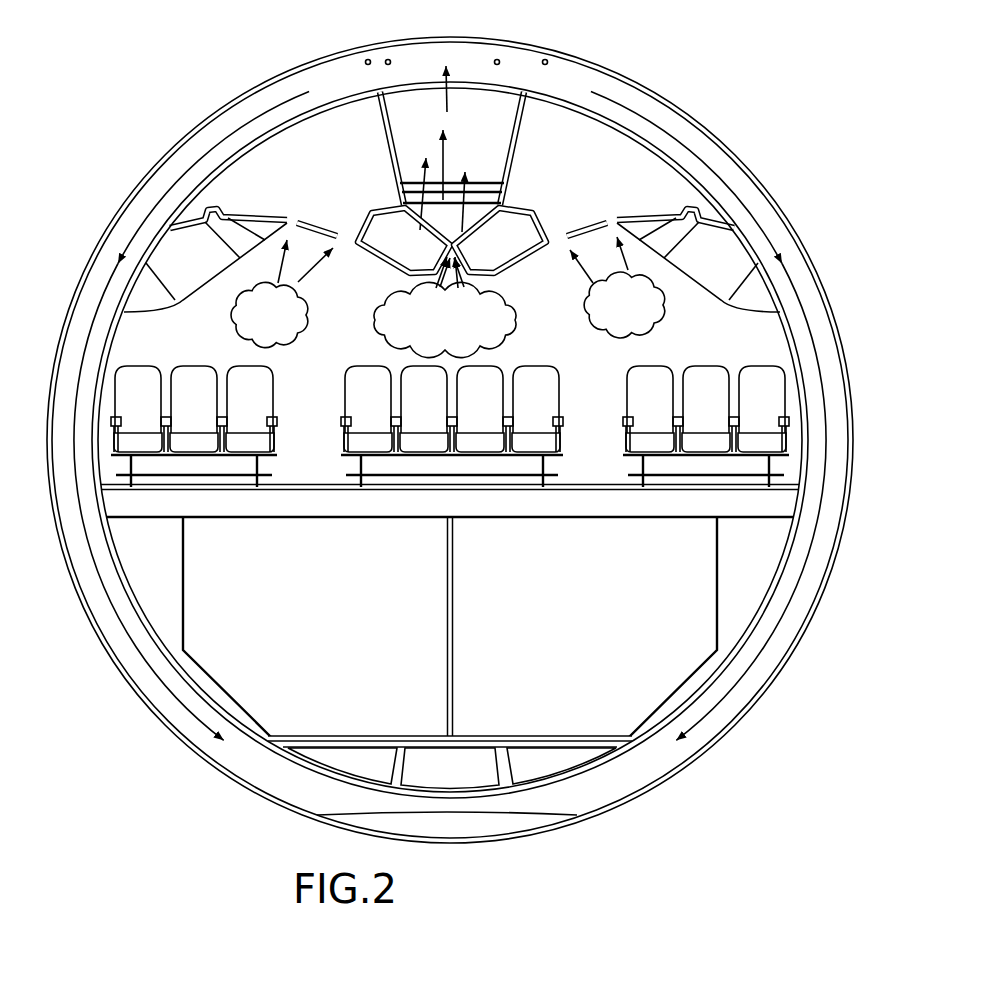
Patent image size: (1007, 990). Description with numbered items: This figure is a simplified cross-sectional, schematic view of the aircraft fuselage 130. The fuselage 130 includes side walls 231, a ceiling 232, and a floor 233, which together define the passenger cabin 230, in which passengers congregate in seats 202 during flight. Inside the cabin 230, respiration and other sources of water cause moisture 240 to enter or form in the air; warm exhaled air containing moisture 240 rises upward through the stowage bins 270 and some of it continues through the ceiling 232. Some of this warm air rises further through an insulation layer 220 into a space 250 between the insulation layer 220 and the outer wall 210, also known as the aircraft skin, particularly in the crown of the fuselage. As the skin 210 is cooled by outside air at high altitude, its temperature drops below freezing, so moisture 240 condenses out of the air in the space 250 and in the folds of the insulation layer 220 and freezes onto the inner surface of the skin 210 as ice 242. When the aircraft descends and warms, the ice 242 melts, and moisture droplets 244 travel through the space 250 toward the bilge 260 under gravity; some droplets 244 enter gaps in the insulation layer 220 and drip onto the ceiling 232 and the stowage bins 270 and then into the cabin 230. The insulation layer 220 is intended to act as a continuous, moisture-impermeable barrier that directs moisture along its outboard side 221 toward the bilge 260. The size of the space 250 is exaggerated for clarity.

The aircraft fuselage 130 is at (135, 738).
The seats 202 is at (540, 387).
The outer wall 210 is at (692, 105).
The insulation layer 220 is at (803, 278).
The outboard side 221 is at (127, 278).
The passenger cabin 230 is at (343, 305).
The side walls 231 is at (790, 352).
The ceiling 232 is at (582, 230).
The floor 233 is at (598, 492).
The moisture 240 is at (286, 331).
The ice 242 is at (462, 48).
The moisture droplets 244 is at (550, 65).
The space 250 is at (320, 81).
The bilge 260 is at (500, 825).
The stowage bins 270 is at (196, 258).